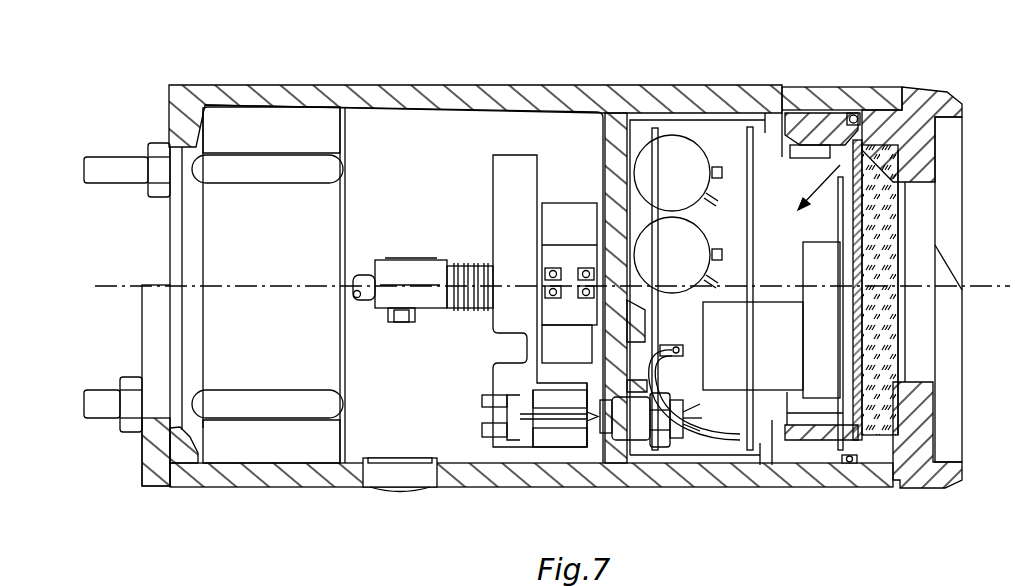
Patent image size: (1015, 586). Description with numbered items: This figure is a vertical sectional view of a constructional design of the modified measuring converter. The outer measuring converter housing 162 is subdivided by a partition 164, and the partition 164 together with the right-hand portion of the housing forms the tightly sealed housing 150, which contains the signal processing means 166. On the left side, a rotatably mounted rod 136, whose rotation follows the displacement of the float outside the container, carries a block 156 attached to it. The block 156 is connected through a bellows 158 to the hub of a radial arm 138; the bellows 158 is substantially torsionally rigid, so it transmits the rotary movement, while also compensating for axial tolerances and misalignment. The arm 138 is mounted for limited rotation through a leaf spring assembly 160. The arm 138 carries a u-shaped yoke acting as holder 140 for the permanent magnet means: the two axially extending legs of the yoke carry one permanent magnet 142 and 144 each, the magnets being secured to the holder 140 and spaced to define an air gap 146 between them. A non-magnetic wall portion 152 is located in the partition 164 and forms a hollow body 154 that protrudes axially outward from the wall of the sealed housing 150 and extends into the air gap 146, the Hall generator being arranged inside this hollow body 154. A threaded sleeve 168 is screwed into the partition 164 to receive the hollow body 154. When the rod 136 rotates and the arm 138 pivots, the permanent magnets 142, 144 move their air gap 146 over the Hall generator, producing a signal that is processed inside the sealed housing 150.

The rod 136 is at (362, 300).
The arm 138 is at (493, 373).
The holder 140 is at (515, 450).
The permanent magnet 142 is at (556, 400).
The permanent magnet 144 is at (558, 447).
The air gap 146 is at (587, 447).
The sealed housing 150 is at (765, 105).
The non-magnetic wall portion 152 is at (632, 450).
The hollow body 154 is at (522, 415).
The block 156 is at (408, 270).
The bellows 158 is at (462, 266).
The leaf spring assembly 160 is at (568, 202).
The measuring converter housing 162 is at (525, 80).
The partition 164 is at (607, 133).
The signal processing means 166 is at (937, 94).
The threaded sleeve 168 is at (645, 440).